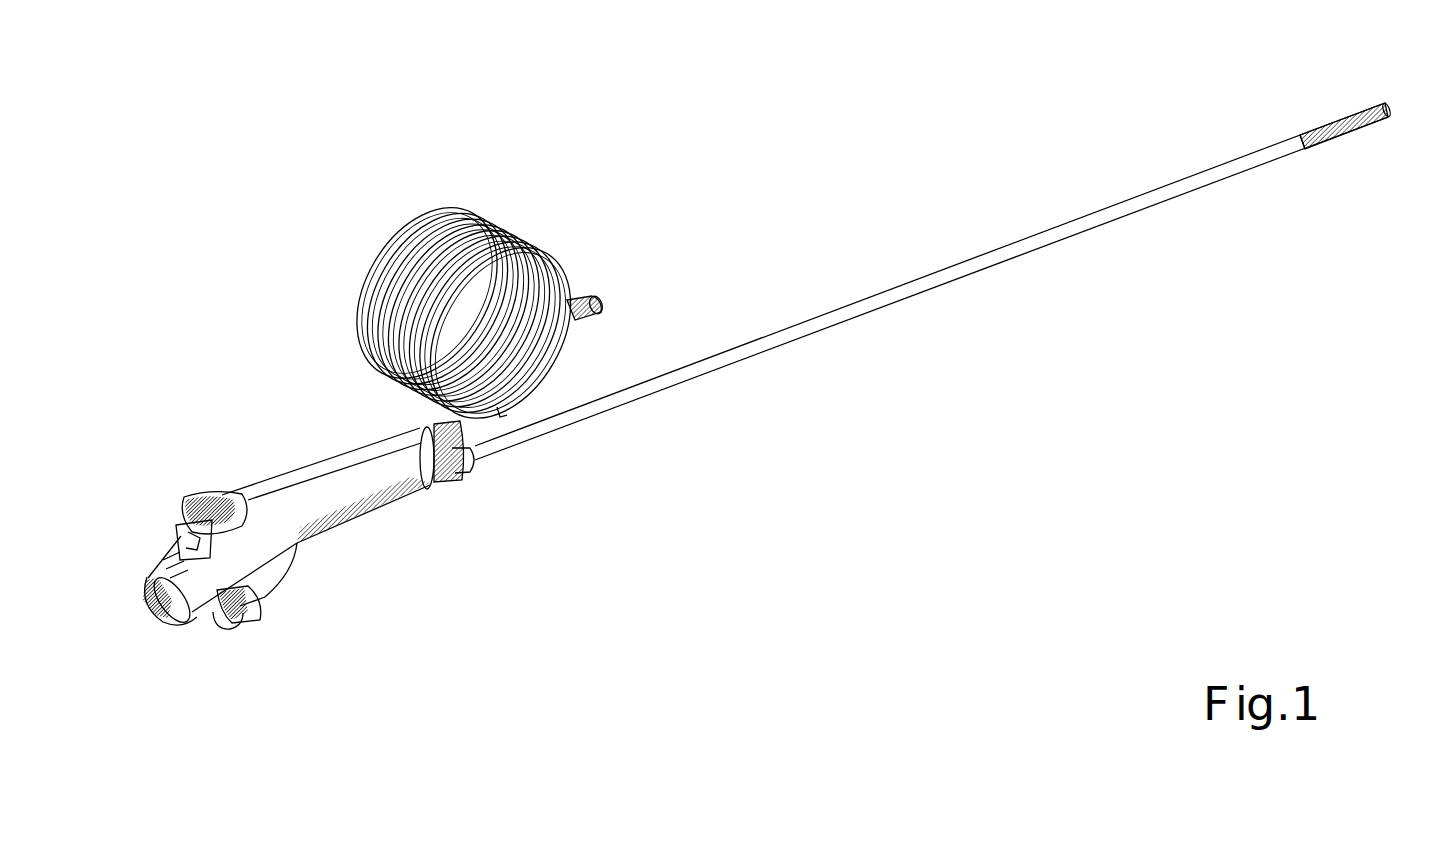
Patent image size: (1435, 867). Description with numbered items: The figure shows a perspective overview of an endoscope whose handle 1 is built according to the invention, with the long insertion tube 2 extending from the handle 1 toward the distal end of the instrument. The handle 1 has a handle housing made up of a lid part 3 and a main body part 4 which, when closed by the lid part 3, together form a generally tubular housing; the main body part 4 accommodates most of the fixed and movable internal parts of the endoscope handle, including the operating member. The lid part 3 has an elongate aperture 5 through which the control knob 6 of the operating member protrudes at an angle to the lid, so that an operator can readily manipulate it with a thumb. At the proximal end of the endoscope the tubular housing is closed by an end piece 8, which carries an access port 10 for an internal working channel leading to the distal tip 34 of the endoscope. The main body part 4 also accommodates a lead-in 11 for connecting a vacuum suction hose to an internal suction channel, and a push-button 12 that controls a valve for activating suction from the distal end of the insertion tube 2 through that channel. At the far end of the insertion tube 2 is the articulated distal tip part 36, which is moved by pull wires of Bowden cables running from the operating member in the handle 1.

The handle 1 is at (298, 384).
The insertion tube 2 is at (775, 333).
The lid part 3 is at (383, 438).
The main body part 4 is at (283, 570).
The elongate aperture 5 is at (195, 527).
The control knob 6 is at (200, 500).
The end piece 8 is at (147, 593).
The access port 10 is at (158, 603).
The lead-in 11 is at (262, 617).
The push-button 12 is at (237, 625).
The distal tip 34 is at (1388, 110).
The articulated distal tip part 36 is at (1340, 117).